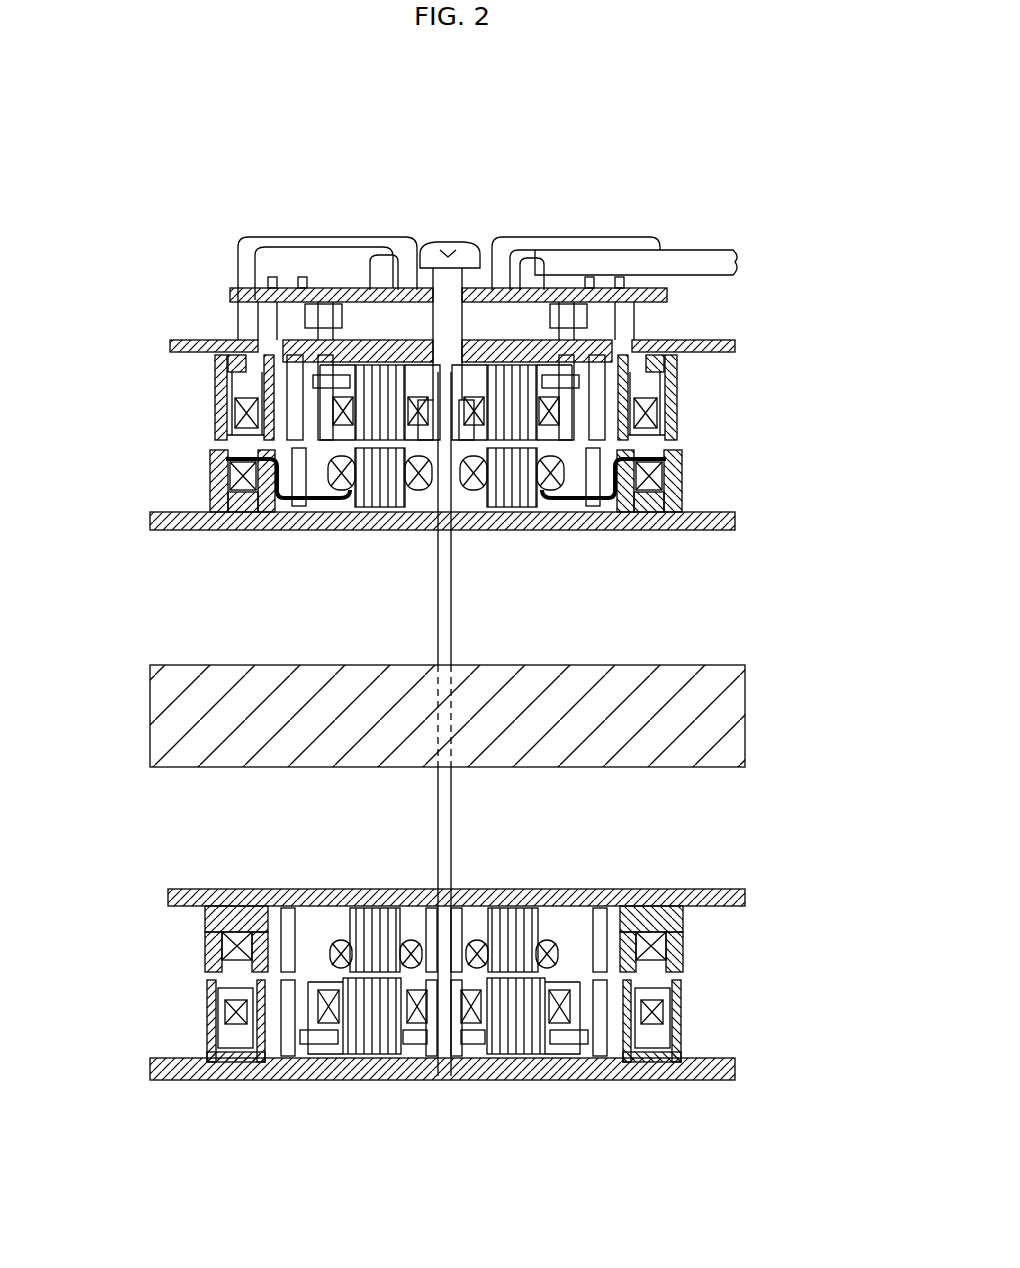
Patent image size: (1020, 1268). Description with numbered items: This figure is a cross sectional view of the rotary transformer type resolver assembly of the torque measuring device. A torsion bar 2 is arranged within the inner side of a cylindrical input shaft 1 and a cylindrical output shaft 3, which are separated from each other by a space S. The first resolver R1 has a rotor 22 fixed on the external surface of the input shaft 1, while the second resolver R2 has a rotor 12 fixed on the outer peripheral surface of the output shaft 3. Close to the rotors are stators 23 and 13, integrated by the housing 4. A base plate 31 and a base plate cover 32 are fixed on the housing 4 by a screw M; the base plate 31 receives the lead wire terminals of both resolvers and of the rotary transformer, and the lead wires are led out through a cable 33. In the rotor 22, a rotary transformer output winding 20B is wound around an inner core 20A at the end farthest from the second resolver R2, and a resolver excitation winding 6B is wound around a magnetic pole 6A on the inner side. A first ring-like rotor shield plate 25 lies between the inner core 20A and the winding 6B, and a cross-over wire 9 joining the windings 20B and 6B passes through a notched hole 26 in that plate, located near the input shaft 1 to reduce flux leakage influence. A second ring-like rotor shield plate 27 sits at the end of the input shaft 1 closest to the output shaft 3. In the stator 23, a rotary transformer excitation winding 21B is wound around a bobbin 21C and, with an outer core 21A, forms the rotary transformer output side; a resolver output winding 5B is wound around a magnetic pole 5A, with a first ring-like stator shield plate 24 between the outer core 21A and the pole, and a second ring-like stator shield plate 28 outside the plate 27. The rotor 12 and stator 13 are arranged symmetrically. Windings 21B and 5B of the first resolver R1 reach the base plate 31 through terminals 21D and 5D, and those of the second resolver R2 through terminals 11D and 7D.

The input shaft 1 is at (175, 525).
The torsion bar 2 is at (172, 682).
The output shaft 3 is at (712, 525).
The housing 4 is at (190, 340).
The magnetic pole 5A is at (422, 302).
The resolver output winding 5B is at (383, 300).
The terminal 5D is at (372, 262).
The magnetic pole 6A is at (380, 500).
The resolver excitation winding 6B is at (408, 505).
The terminal 7D is at (580, 290).
The cross-over wire 9 is at (642, 505).
The terminal 11D is at (650, 250).
The rotor 12 is at (684, 478).
The stator 13 is at (684, 405).
The inner core 20A is at (262, 500).
The rotary transformer output winding 20B is at (242, 500).
The outer core 21A is at (215, 440).
The rotary transformer excitation winding 21B is at (258, 405).
The bobbin 21C is at (222, 412).
The terminal 21D is at (262, 335).
The rotor 22 is at (207, 490).
The stator 23 is at (214, 416).
The first ring-like stator shield plate 24 is at (295, 385).
The first ring-like rotor shield plate 25 is at (300, 490).
The notched hole 26 is at (282, 497).
The second ring-like rotor shield plate 27 is at (458, 505).
The second ring-like stator shield plate 28 is at (432, 338).
The base plate 31 is at (222, 292).
The base plate cover 32 is at (262, 240).
The cable 33 is at (722, 262).
The screw M is at (438, 245).
The space S is at (452, 610).
The first resolver R1 is at (303, 195).
The second resolver R2 is at (582, 190).